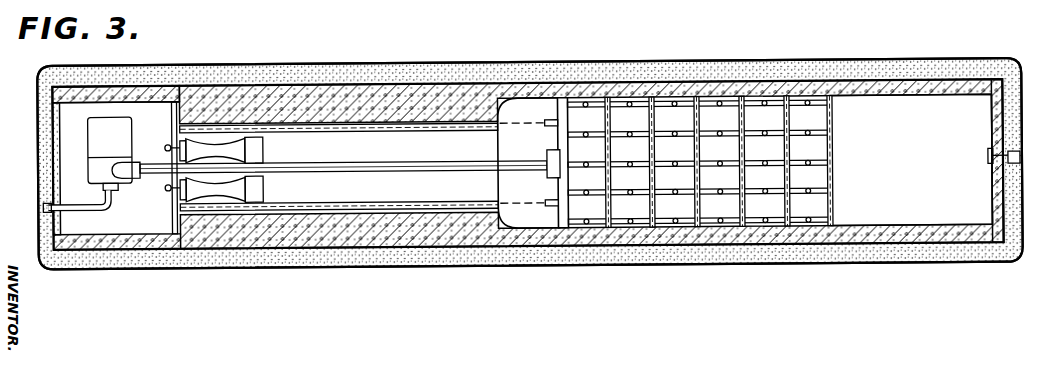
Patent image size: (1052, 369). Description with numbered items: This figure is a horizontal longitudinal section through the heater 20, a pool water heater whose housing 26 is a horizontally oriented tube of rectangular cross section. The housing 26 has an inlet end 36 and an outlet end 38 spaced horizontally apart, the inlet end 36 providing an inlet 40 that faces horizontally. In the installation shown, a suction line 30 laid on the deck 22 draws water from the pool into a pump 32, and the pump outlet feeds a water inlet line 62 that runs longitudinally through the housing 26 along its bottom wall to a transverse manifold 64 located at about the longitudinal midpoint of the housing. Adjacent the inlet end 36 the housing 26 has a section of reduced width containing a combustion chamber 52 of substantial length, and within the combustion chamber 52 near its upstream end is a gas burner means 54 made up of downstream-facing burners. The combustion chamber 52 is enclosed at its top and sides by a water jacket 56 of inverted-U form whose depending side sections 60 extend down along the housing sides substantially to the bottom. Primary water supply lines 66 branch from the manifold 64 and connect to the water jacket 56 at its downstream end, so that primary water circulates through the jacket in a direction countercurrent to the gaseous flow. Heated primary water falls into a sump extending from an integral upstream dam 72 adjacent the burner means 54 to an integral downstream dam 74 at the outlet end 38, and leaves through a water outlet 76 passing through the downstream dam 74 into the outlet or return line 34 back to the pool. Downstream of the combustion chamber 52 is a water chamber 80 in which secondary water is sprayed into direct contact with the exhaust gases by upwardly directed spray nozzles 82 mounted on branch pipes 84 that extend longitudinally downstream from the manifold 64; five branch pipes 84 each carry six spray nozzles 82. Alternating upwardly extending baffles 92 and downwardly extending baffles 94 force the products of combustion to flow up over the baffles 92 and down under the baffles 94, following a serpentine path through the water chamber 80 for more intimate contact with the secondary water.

The heater 20 is at (383, 83).
The deck 22 is at (812, 75).
The housing 26 is at (467, 97).
The suction line 30 is at (47, 200).
The pump 32 is at (97, 130).
The outlet or return line 34 is at (996, 157).
The inlet end 36 is at (80, 93).
The outlet end 38 is at (991, 83).
The inlet 40 is at (56, 100).
The combustion chamber 52 is at (356, 209).
The gas burner means 54 is at (217, 193).
The water jacket 56 is at (338, 95).
The side sections 60 is at (283, 93).
The water inlet line 62 is at (150, 170).
The manifold 64 is at (563, 229).
The primary water supply lines 66 is at (548, 120).
The upstream dam 72 is at (181, 122).
The downstream dam 74 is at (998, 204).
The water outlet 76 is at (992, 171).
The water chamber 80 is at (727, 164).
The spray nozzles 82 is at (681, 101).
The branch pipes 84 is at (779, 102).
The upwardly extending baffles 92 is at (606, 230).
The downwardly extending baffles 94 is at (834, 210).